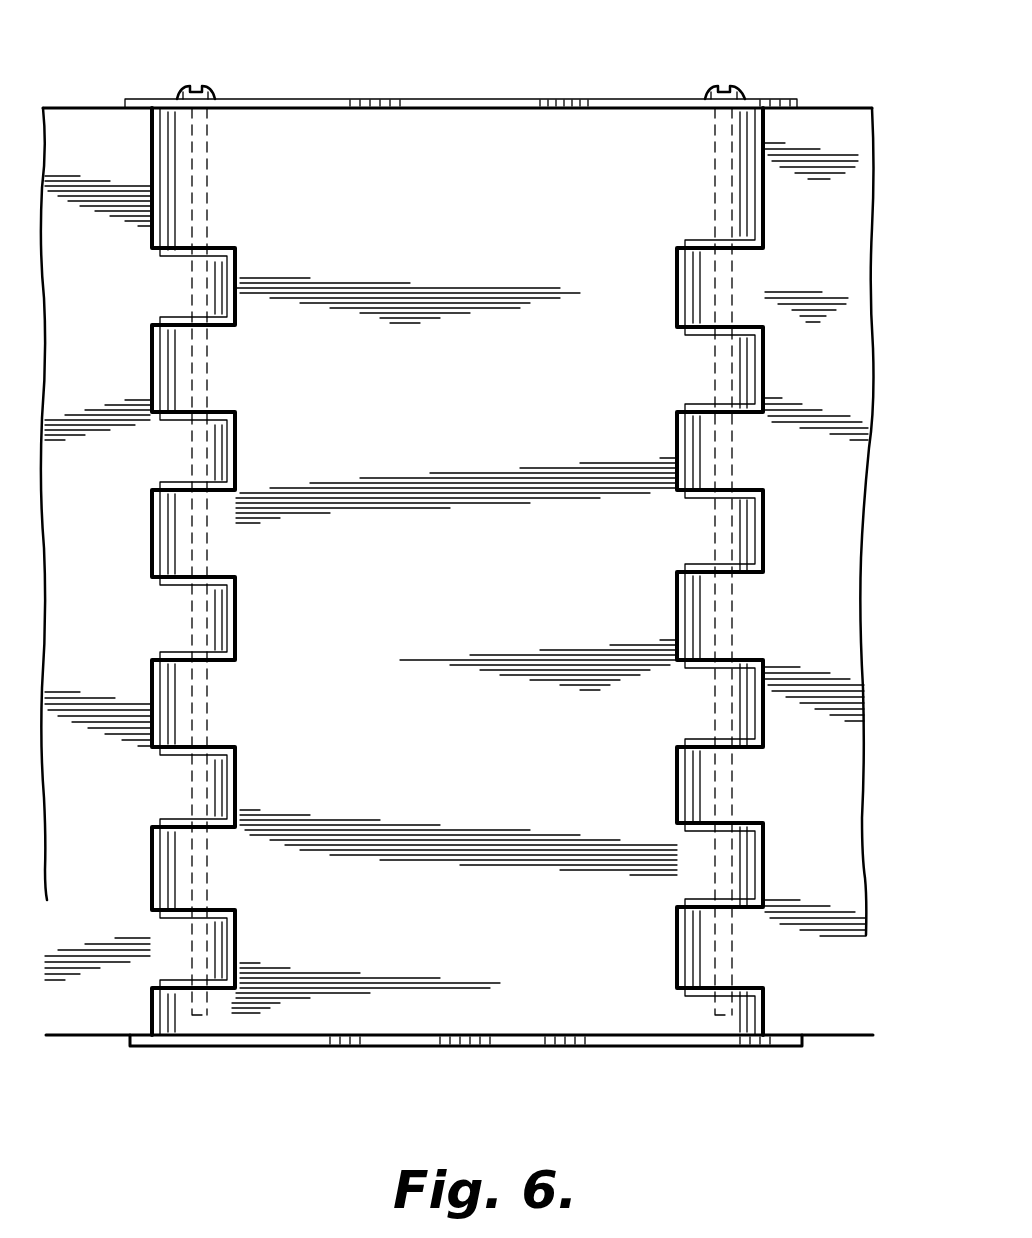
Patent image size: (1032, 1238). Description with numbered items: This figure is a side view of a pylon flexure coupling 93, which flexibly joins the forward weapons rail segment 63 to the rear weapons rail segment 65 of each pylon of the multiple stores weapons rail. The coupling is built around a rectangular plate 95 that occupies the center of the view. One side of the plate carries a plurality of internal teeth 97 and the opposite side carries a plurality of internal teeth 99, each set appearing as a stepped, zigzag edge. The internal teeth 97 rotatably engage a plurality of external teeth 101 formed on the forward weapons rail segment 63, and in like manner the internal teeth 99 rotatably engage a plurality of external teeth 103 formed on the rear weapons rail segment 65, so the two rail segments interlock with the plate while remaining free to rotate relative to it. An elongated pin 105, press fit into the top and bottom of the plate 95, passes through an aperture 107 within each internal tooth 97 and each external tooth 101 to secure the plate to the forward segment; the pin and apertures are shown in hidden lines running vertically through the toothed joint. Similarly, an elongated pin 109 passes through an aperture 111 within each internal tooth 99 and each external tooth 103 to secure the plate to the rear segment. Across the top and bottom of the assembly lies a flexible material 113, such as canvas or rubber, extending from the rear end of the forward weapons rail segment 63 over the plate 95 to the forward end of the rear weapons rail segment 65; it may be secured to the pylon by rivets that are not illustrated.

The forward weapons rail segment 63 is at (88, 106).
The rear weapons rail segment 65 is at (845, 106).
The pylon flexure coupling 93 is at (410, 64).
The rectangular plate 95 is at (490, 216).
The internal teeth 97 is at (221, 334).
The internal teeth 99 is at (685, 340).
The external teeth 101 is at (168, 322).
The external teeth 103 is at (743, 254).
The elongated pin 105 is at (205, 88).
The aperture 107 is at (205, 286).
The elongated pin 109 is at (732, 87).
The aperture 111 is at (718, 287).
The flexible material 113 is at (540, 98).